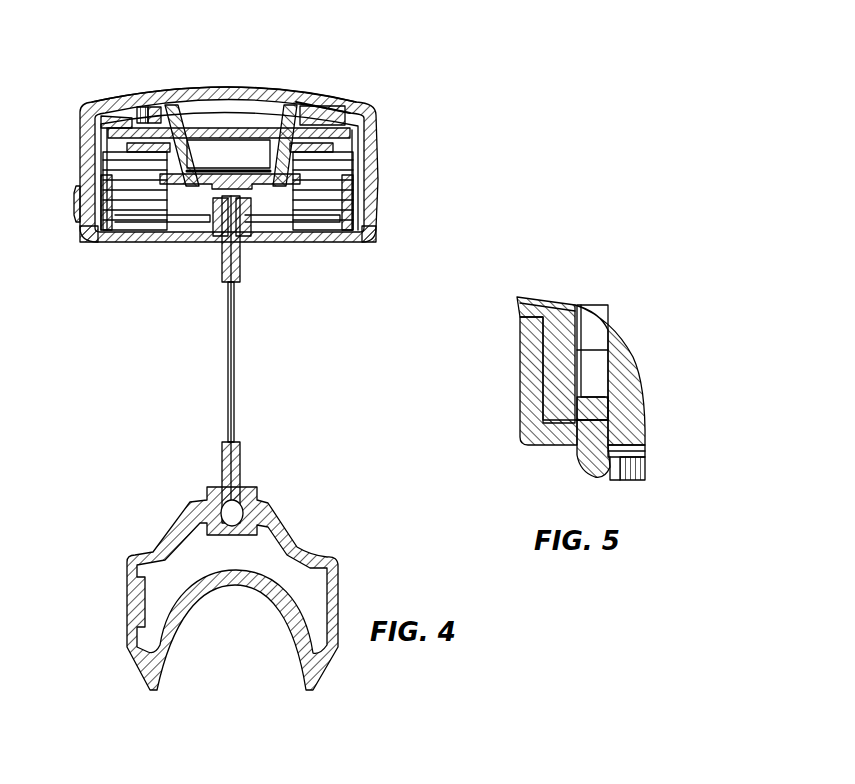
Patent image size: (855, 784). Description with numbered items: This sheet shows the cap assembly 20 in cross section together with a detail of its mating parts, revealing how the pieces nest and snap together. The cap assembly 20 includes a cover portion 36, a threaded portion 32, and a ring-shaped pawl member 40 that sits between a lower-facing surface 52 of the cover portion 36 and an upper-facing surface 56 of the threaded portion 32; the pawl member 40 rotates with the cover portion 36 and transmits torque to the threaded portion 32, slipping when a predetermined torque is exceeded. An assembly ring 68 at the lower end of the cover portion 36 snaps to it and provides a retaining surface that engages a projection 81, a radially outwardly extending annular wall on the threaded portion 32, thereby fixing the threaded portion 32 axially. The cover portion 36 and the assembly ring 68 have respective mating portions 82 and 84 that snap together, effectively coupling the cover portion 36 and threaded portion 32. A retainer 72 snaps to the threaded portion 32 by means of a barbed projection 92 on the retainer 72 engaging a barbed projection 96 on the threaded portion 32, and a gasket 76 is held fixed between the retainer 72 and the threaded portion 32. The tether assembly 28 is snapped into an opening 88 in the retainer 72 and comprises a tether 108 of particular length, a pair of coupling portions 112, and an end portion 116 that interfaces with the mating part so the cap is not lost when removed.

In FIG. 4, the cap assembly 20 is at (102, 62).
In FIG. 4, the tether assembly 28 is at (130, 470).
In FIG. 4, the threaded portion 32 is at (378, 162).
In FIG. 5, the threaded portion 32 is at (633, 370).
In FIG. 4, the cover portion 36 is at (318, 104).
In FIG. 5, the cover portion 36 is at (560, 301).
In FIG. 4, the pawl member 40 is at (136, 102).
In FIG. 4, the lower-facing surface 52 is at (248, 96).
In FIG. 4, the upper-facing surface 56 is at (346, 112).
In FIG. 4, the assembly ring 68 is at (78, 208).
In FIG. 5, the assembly ring 68 is at (610, 480).
In FIG. 4, the retainer 72 is at (285, 170).
In FIG. 4, the gasket 76 is at (119, 104).
In FIG. 4, the projection 81 is at (378, 218).
In FIG. 5, the projection 81 is at (577, 442).
In FIG. 5, the mating portion 82 is at (525, 411).
In FIG. 5, the mating portion 84 is at (527, 367).
In FIG. 4, the opening 88 is at (212, 196).
In FIG. 4, the projection 92 is at (214, 126).
In FIG. 4, the projection 96 is at (184, 180).
In FIG. 4, the tether 108 is at (240, 354).
In FIG. 4, the coupling portions 112 is at (244, 252).
In FIG. 4, the end portion 116 is at (300, 538).